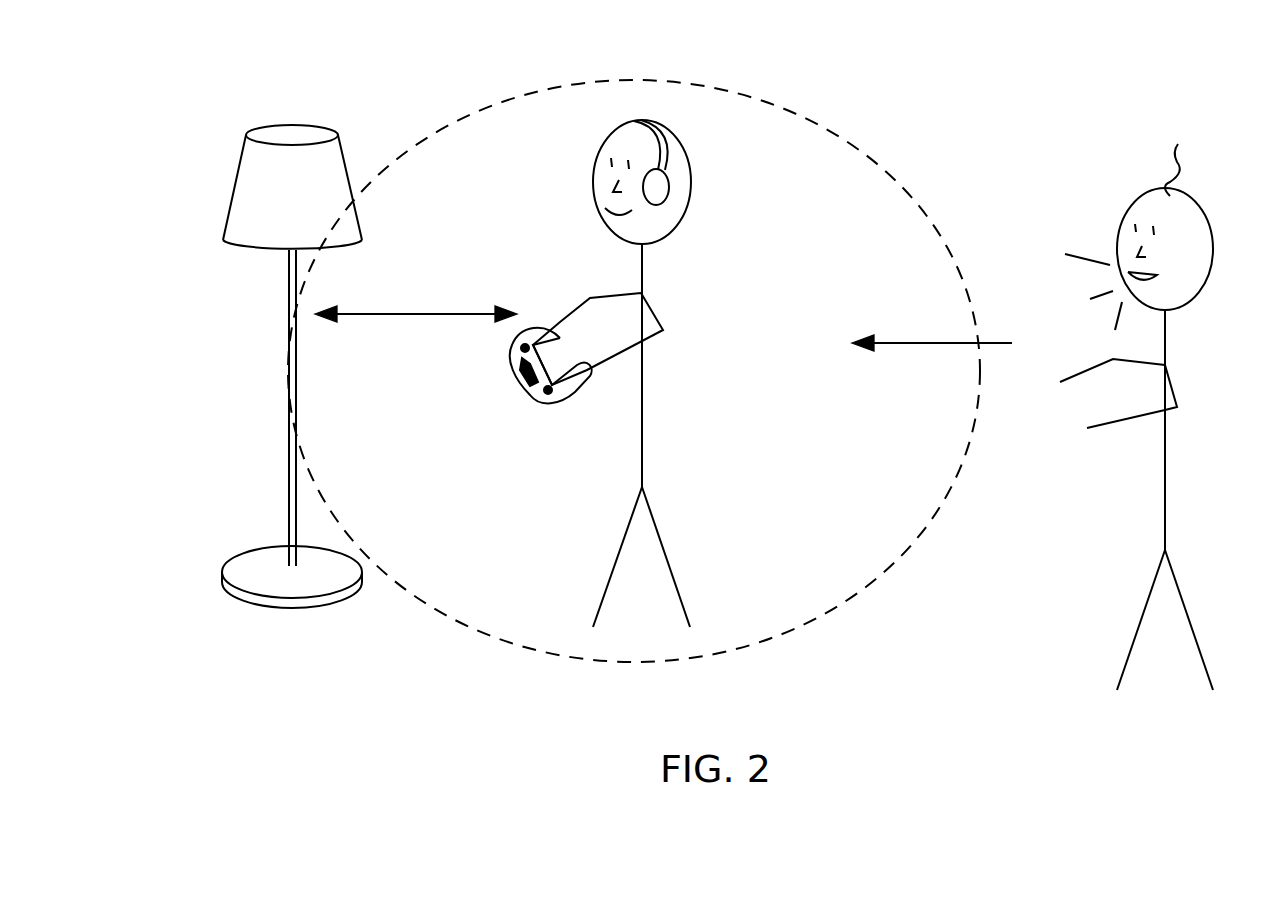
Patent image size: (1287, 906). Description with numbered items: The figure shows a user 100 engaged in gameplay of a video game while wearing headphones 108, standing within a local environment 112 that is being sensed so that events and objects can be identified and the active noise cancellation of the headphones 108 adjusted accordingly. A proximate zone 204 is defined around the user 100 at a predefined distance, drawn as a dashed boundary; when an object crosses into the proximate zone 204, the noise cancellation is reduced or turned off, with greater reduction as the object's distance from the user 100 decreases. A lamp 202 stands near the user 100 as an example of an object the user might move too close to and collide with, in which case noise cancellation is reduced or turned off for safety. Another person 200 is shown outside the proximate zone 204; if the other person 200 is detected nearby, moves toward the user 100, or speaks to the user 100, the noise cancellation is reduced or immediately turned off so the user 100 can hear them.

The local environment 112 is at (450, 61).
The proximate zone 204 is at (753, 100).
The lamp 202 is at (235, 181).
The user 100 is at (594, 163).
The headphones 108 is at (663, 203).
The other person 200 is at (1120, 227).